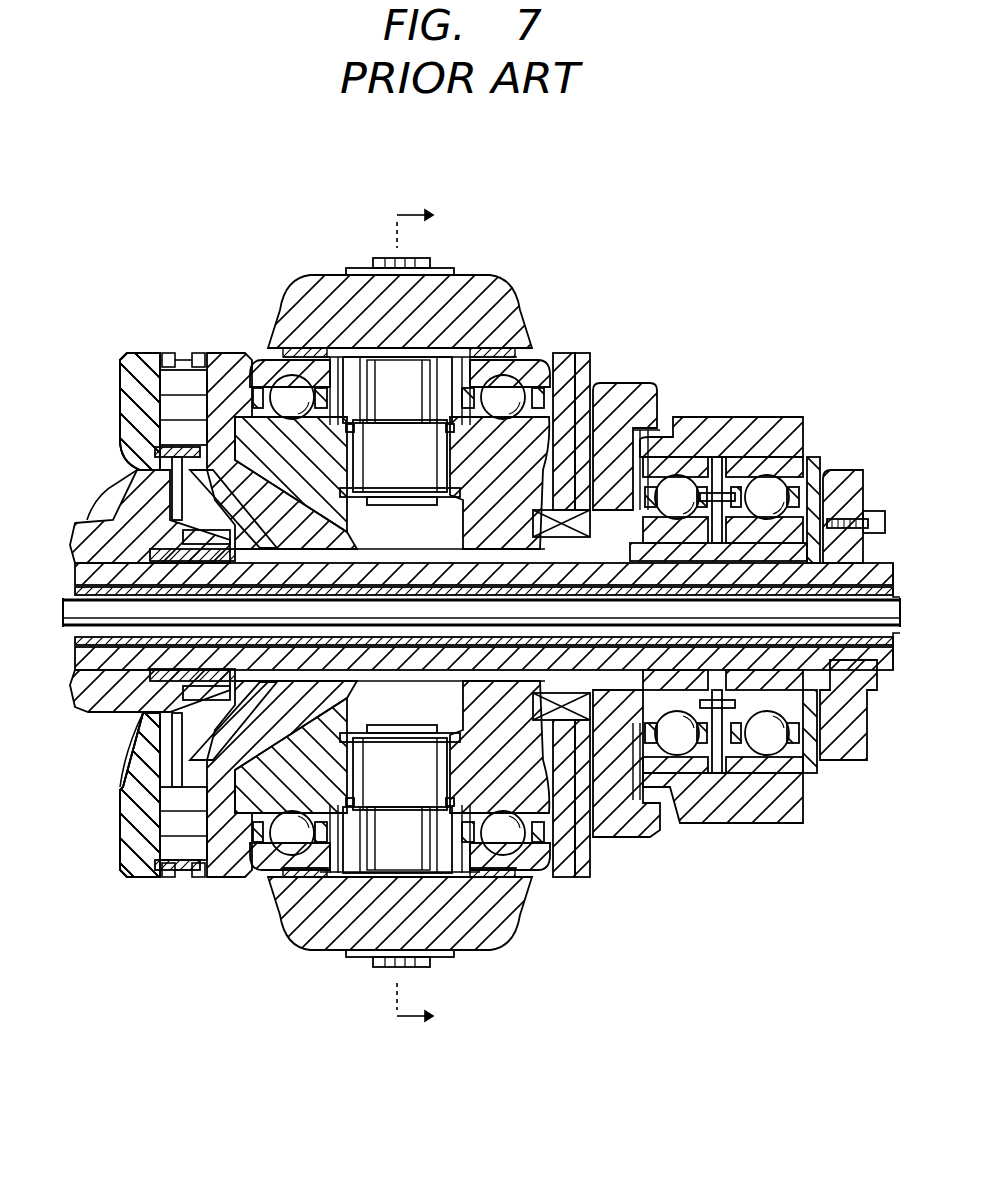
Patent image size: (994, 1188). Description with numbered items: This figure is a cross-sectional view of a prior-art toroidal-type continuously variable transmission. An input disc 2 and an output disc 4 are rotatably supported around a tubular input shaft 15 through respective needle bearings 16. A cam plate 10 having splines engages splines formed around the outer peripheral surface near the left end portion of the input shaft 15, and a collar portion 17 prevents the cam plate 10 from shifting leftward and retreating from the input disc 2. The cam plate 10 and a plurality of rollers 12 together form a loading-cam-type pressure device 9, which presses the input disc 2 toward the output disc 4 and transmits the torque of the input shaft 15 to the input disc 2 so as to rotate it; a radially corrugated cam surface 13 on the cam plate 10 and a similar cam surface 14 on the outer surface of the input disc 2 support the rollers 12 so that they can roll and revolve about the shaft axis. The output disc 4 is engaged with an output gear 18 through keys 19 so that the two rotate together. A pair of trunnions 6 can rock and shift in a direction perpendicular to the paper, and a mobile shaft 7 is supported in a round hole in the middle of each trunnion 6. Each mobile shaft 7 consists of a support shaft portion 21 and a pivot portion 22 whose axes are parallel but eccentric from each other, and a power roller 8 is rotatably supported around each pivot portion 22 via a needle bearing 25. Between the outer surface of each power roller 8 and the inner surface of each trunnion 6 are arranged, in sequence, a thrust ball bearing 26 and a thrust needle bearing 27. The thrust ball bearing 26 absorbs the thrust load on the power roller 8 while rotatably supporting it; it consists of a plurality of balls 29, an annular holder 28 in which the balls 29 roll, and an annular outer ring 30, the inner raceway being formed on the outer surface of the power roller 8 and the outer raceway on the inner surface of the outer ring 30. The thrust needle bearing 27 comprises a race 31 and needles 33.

The input disc 2 is at (220, 353).
The output disc 4 is at (588, 380).
The trunnion 6 is at (460, 280).
The mobile shaft 7 is at (418, 377).
The power roller 8 is at (97, 748).
The loading-cam-type pressure device 9 is at (137, 393).
The cam plate 10 is at (128, 353).
The roller 12 is at (177, 377).
The cam surface 13 is at (123, 368).
The cam surface 14 is at (183, 357).
The tubular input shaft 15 is at (893, 590).
The needle bearing 16 is at (403, 548).
The collar portion 17 is at (97, 525).
The output gear 18 is at (650, 390).
The key 19 is at (563, 700).
The support shaft portion 21 is at (393, 262).
The pivot portion 22 is at (377, 430).
The needle bearing 25 is at (450, 470).
The thrust ball bearing 26 is at (540, 420).
The thrust needle bearing 27 is at (535, 330).
The annular holder 28 is at (592, 372).
The ball 29 is at (650, 437).
The annular outer ring 30 is at (267, 357).
The race 31 is at (320, 353).
The needle 33 is at (290, 347).